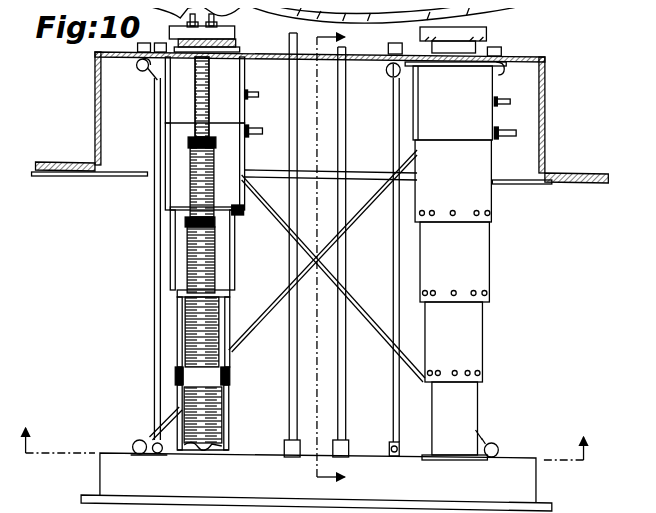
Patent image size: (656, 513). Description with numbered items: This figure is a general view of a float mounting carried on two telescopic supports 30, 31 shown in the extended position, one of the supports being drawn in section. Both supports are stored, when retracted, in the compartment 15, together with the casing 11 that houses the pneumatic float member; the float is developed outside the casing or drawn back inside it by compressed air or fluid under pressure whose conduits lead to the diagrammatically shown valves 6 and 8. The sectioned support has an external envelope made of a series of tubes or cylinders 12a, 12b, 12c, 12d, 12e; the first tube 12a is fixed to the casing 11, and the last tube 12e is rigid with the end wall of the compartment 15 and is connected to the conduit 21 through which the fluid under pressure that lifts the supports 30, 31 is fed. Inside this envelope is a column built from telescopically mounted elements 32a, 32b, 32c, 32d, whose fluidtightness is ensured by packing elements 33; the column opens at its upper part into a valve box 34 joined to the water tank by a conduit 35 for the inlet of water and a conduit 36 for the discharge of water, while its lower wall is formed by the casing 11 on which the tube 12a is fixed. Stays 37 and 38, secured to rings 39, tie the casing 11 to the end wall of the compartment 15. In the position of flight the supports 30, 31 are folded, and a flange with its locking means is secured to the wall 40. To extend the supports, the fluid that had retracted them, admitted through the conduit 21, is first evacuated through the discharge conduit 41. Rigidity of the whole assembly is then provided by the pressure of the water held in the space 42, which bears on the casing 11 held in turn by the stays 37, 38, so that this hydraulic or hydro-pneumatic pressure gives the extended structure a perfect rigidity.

The valve 6 is at (350, 443).
The valve 8 is at (283, 443).
The casing 11 is at (527, 480).
The tube 12a is at (227, 397).
The tube 12b is at (228, 305).
The tube 12c is at (233, 253).
The tube 12d is at (238, 153).
The tube 12e is at (243, 115).
The compartment 15 is at (547, 125).
The conduit 21 is at (262, 133).
The telescopic support 30 is at (228, 364).
The telescopic support 31 is at (458, 343).
The column element 32a is at (180, 337).
The column element 32b is at (185, 267).
The column element 32c is at (187, 188).
The column element 32d is at (192, 98).
The packing element 33 is at (187, 140).
The valve box 34 is at (245, 58).
The conduit 35 is at (235, 33).
The conduit 36 is at (167, 32).
The stay 37 is at (356, 298).
The stay 38 is at (150, 238).
The ring 39 is at (134, 65).
The wall 40 is at (580, 185).
The discharge conduit 41 is at (254, 94).
The water space 42 is at (237, 203).